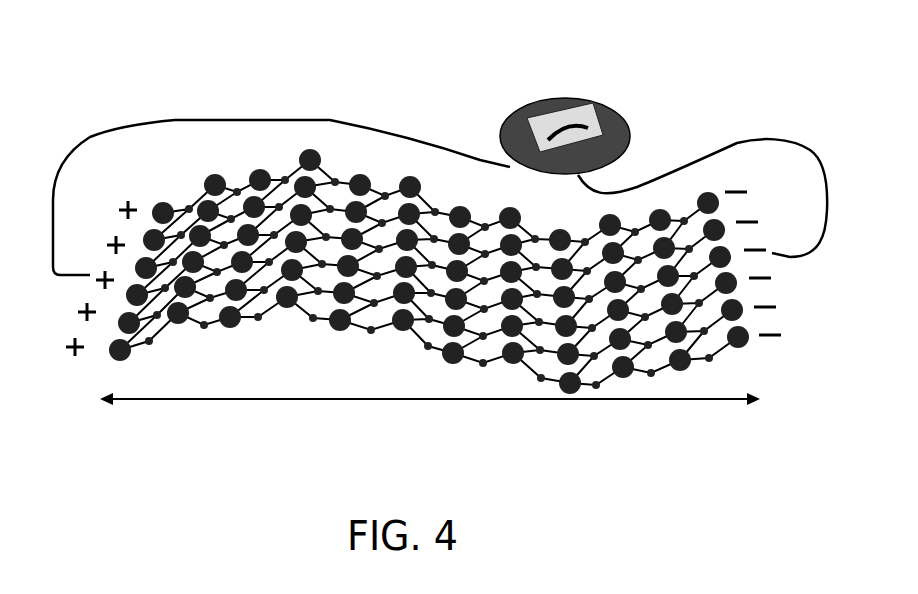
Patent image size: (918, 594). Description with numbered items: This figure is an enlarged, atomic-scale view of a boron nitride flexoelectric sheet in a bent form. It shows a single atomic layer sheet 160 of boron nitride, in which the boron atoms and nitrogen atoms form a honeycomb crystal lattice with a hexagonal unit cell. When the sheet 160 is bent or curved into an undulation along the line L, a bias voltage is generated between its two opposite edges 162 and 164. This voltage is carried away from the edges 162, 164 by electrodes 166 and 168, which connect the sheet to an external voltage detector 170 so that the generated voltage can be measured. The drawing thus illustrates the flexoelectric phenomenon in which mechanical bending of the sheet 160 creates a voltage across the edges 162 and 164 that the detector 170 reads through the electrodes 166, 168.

The single atomic layer sheet 160 is at (358, 132).
The edge 162 is at (143, 208).
The edge 164 is at (717, 195).
The electrode 166 is at (220, 118).
The electrode 168 is at (794, 145).
The external voltage detector 170 is at (623, 113).